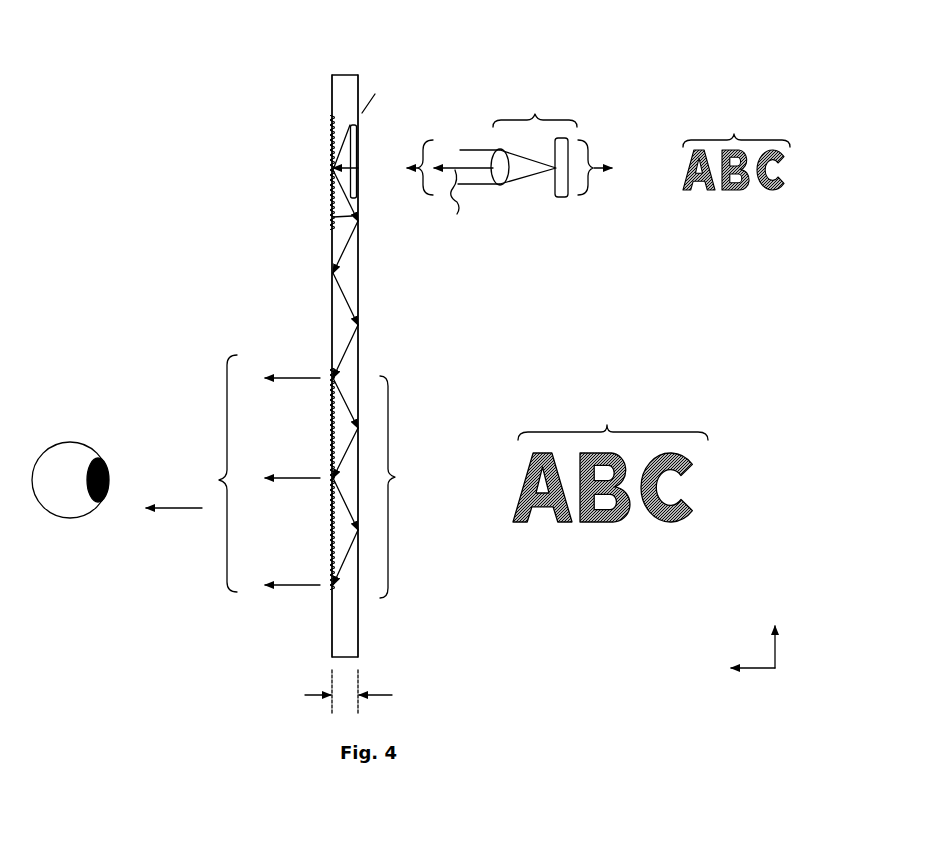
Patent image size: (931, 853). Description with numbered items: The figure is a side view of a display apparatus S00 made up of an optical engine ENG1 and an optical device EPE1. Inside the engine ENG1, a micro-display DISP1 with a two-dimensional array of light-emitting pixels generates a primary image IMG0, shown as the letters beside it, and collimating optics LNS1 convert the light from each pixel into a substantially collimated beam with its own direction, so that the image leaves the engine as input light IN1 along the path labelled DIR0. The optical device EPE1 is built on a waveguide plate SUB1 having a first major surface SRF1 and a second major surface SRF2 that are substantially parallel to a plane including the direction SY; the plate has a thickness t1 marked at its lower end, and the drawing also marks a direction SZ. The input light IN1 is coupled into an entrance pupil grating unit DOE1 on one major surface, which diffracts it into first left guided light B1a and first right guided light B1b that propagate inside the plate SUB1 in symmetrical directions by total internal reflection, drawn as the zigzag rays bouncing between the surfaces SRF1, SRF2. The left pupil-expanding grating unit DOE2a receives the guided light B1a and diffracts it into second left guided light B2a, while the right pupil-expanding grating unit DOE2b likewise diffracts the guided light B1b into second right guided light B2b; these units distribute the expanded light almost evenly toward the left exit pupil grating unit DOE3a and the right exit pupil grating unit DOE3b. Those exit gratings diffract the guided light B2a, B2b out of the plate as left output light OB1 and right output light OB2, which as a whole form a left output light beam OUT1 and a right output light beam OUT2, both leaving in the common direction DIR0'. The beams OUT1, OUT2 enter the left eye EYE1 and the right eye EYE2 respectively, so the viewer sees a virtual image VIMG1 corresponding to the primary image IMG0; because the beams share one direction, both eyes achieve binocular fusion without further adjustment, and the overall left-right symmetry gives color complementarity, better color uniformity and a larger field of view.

The display apparatus S00 is at (275, 110).
The optical device EPE1 is at (377, 61).
The waveguide plate SUB1 is at (358, 627).
The first major surface SRF1 is at (358, 305).
The second major surface SRF2 is at (332, 317).
The entrance pupil grating unit DOE1 is at (357, 156).
The left pupil-expanding grating unit DOE2a is at (273, 172).
The right pupil-expanding grating unit DOE2b is at (332, 190).
The left exit pupil grating unit DOE3a is at (403, 483).
The right exit pupil grating unit DOE3b is at (403, 483).
The first left guided light B1a is at (410, 92).
The first right guided light B1b is at (410, 92).
The second left guided light B2a is at (261, 230).
The second right guided light B2b is at (332, 217).
The input light IN1 is at (404, 167).
The optical engine ENG1 is at (505, 134).
The collimating optics LNS1 is at (498, 185).
The micro-display DISP1 is at (560, 197).
The input direction DIR0 is at (470, 209).
The primary image IMG0 is at (684, 149).
The virtual image VIMG1 is at (610, 457).
The left output light OB1 is at (287, 459).
The right output light OB2 is at (287, 459).
The left output light beam OUT1 is at (193, 473).
The right output light beam OUT2 is at (193, 473).
The direction of output light DIR0' is at (174, 545).
The left eye EYE1 is at (70, 517).
The right eye EYE2 is at (70, 518).
The thickness t1 is at (348, 692).
The direction SY is at (777, 634).
The Z axis direction SZ is at (737, 671).